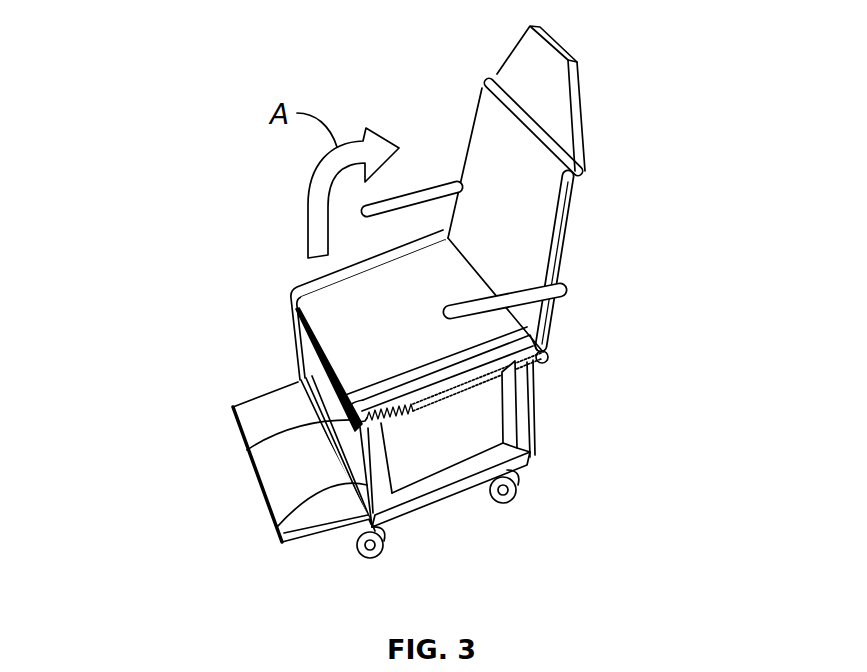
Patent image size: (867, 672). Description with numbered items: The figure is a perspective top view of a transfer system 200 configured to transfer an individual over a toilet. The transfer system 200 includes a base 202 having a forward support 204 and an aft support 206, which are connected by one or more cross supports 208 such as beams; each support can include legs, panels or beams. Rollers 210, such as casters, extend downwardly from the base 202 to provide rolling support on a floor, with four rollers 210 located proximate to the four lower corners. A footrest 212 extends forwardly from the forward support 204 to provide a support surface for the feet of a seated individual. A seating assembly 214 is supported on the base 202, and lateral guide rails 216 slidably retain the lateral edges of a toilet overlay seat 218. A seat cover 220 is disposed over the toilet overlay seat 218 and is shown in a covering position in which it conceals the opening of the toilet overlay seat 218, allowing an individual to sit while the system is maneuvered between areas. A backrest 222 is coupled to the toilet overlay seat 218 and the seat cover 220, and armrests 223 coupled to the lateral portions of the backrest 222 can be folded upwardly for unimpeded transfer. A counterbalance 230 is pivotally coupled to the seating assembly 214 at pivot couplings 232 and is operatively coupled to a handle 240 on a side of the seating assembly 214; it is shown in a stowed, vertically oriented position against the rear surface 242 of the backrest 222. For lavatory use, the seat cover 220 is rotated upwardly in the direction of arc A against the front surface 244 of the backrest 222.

The transfer system 200 is at (157, 119).
The base 202 is at (510, 461).
The forward support 204 is at (275, 535).
The aft support 206 is at (530, 393).
The cross support 208 is at (440, 488).
The roller 210 is at (513, 498).
The footrest 212 is at (263, 498).
The seating assembly 214 is at (279, 322).
The lateral guide rail 216 is at (292, 298).
The toilet overlay seat 218 is at (553, 330).
The seat cover 220 is at (335, 307).
The backrest 222 is at (583, 170).
The armrest 223 is at (432, 182).
The counterbalance 230 is at (593, 229).
The pivot coupling 232 is at (548, 351).
The handle 240 is at (450, 397).
The rear surface 242 is at (583, 182).
The front surface 244 is at (503, 123).